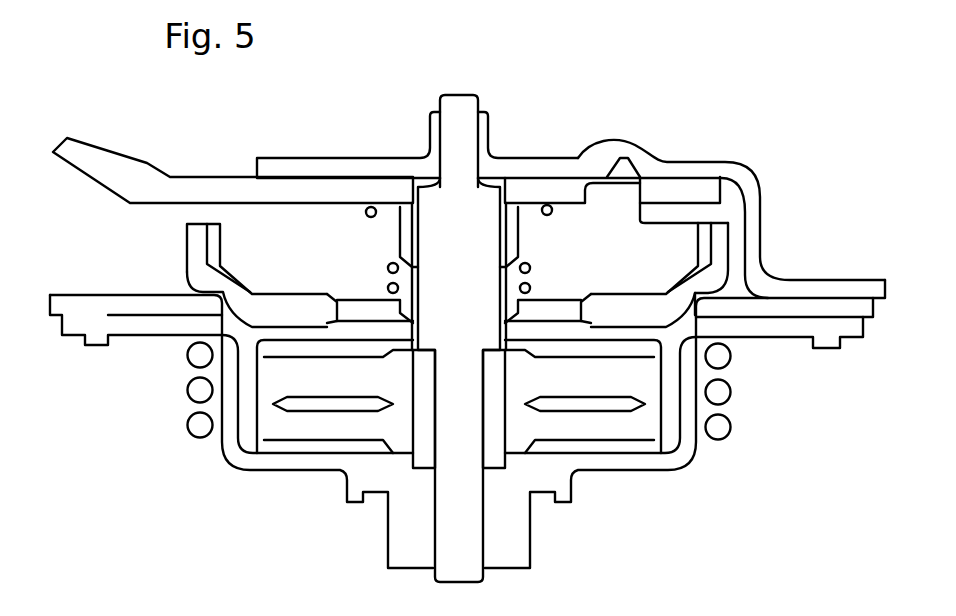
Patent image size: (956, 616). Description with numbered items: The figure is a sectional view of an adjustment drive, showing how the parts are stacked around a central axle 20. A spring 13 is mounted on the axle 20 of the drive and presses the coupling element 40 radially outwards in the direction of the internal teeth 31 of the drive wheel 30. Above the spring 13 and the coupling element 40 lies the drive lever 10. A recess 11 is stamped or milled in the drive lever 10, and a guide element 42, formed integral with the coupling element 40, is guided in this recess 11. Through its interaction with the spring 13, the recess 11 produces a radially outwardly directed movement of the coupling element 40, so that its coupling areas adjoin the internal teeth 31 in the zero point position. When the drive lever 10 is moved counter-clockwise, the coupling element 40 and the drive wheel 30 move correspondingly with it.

The drive lever 10 is at (87, 165).
The internal teeth 31 is at (215, 277).
The spring 13 is at (553, 218).
The axle 20 is at (455, 115).
The recess 11 is at (566, 182).
The guide element 42 is at (628, 197).
The coupling element 40 is at (668, 257).
The drive wheel 30 is at (718, 247).